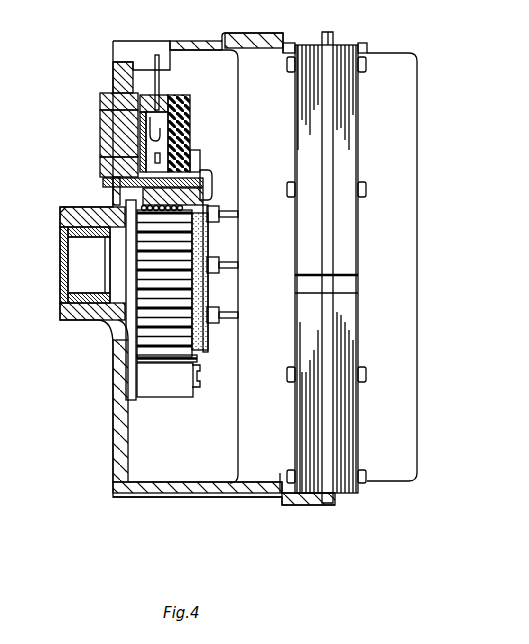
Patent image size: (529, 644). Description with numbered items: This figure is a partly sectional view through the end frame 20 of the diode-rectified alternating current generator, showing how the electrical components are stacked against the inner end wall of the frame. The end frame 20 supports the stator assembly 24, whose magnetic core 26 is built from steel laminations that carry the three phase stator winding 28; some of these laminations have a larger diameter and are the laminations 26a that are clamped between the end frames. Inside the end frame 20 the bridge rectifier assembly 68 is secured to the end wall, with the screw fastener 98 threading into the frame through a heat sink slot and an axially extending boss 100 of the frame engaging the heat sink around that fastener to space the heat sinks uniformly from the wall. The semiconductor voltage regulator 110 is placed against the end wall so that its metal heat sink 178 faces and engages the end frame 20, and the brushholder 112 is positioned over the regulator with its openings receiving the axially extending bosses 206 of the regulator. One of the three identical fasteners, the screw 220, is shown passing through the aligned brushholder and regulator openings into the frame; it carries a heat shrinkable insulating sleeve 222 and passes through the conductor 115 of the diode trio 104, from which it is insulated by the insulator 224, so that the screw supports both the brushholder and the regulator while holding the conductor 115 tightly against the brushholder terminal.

The end frame 20 is at (118, 443).
The axially extending bosses 206 is at (142, 52).
The metal heat sink 178 is at (115, 137).
The semiconductor voltage regulator 110 is at (168, 94).
The brushholder 112 is at (186, 110).
The sleeve of insulating material 222 is at (193, 163).
The screw 220 is at (212, 181).
The insulator 224 is at (195, 167).
The conductor 115 is at (212, 222).
The diode trio 104 is at (213, 297).
The bridge rectifier assembly 68 is at (197, 358).
The boss 100 is at (133, 393).
The screw fastener 98 is at (197, 388).
The magnetic core 26 is at (342, 105).
The large diameter laminations 26a is at (328, 32).
The stator assembly 24 is at (367, 51).
The stator winding 28 is at (418, 173).